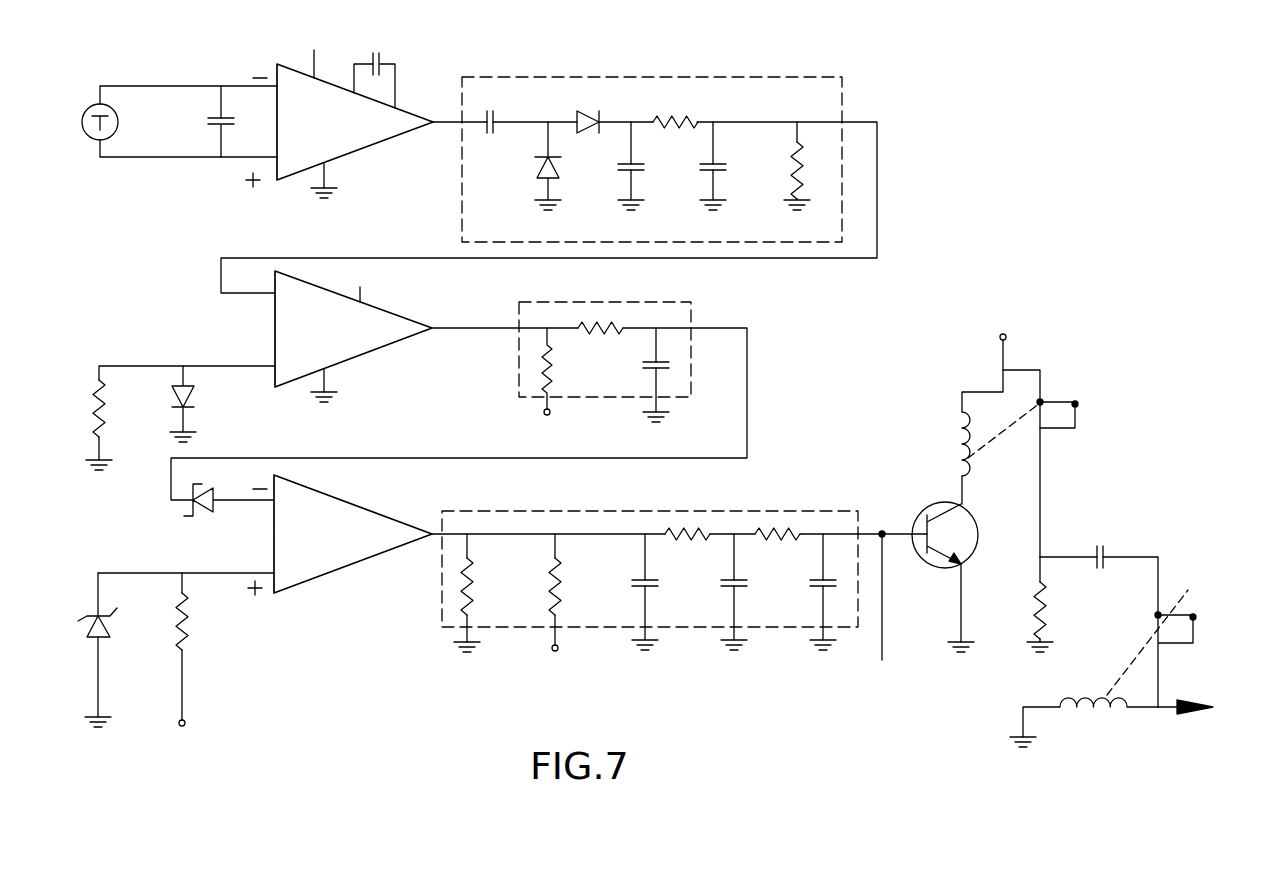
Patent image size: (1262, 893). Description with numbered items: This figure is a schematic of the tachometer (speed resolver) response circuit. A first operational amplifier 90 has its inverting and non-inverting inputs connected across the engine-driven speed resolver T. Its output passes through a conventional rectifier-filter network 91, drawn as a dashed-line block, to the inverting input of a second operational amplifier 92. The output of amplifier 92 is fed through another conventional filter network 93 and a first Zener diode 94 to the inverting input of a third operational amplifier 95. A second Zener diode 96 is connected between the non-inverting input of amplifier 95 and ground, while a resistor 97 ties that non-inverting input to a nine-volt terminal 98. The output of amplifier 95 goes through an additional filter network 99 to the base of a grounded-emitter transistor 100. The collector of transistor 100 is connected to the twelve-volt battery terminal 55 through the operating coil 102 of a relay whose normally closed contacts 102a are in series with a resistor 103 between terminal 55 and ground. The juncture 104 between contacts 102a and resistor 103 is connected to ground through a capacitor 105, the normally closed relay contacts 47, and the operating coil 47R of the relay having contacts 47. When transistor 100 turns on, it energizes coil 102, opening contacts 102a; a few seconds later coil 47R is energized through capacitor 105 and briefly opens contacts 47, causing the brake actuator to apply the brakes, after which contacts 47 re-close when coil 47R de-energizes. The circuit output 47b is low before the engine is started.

The first operational amplifier 90 is at (373, 143).
The rectifier-filter network 91 is at (638, 75).
The second operational amplifier 92 is at (380, 352).
The filter network 93 is at (597, 300).
The first Zener diode 94 is at (205, 507).
The third operational amplifier 95 is at (352, 565).
The second Zener diode 96 is at (87, 632).
The resistor 97 is at (188, 630).
The +9 volt terminal 98 is at (185, 721).
The additional filter network 99 is at (598, 510).
The grounded-emitter transistor 100 is at (938, 502).
The operating coil 102 is at (948, 447).
The normally closed contacts 102a is at (1055, 396).
The +12 volt battery terminal 55 is at (1000, 338).
The resistor 103 is at (1047, 597).
The juncture 104 is at (1040, 555).
The capacitor 105 is at (1113, 543).
The normally closed relay contacts 47 is at (1195, 615).
The operating coil 47R is at (1100, 713).
The output 47b is at (1172, 707).